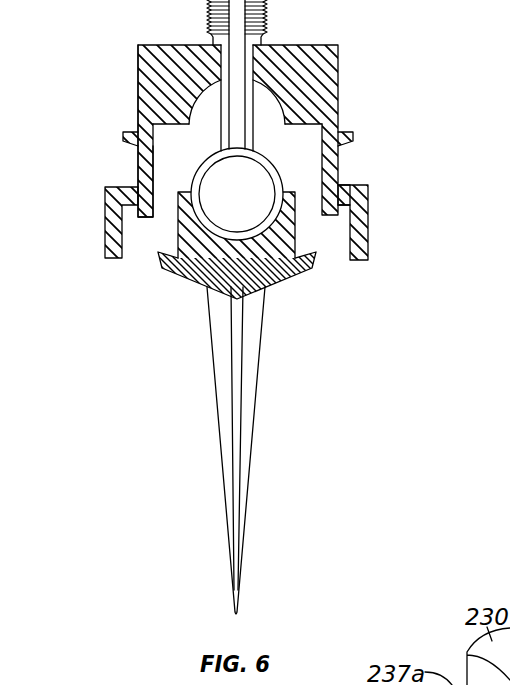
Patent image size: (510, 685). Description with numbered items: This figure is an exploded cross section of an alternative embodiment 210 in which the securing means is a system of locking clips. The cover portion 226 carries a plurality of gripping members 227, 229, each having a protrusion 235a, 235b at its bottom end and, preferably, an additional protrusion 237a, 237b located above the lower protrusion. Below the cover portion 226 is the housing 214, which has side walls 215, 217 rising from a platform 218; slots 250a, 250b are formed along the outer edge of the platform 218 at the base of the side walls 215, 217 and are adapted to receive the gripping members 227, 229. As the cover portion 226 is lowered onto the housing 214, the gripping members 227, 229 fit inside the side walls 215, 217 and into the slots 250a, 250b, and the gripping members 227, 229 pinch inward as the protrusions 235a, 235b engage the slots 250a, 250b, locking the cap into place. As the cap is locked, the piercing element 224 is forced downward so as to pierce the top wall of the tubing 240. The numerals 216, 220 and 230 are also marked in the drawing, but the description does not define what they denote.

The alternative embodiment 210 is at (441, 159).
The housing 214 is at (368, 240).
The side wall 215 is at (368, 228).
The needle 216 is at (262, 378).
The side wall 217 is at (106, 216).
The platform 218 is at (158, 255).
The needle seat block 220 is at (270, 237).
The piercing element 224 is at (325, 77).
The cover portion 226 is at (308, 45).
The gripping member 227 is at (138, 110).
The gripping member 229 is at (339, 127).
The hub 230 is at (138, 73).
The protrusion 235a is at (148, 218).
The protrusion 235b is at (343, 217).
The additional protrusion 237a is at (123, 137).
The additional protrusion 237b is at (353, 138).
The tubing 240 is at (248, 150).
The slot 250a is at (149, 262).
The slot 250b is at (334, 262).